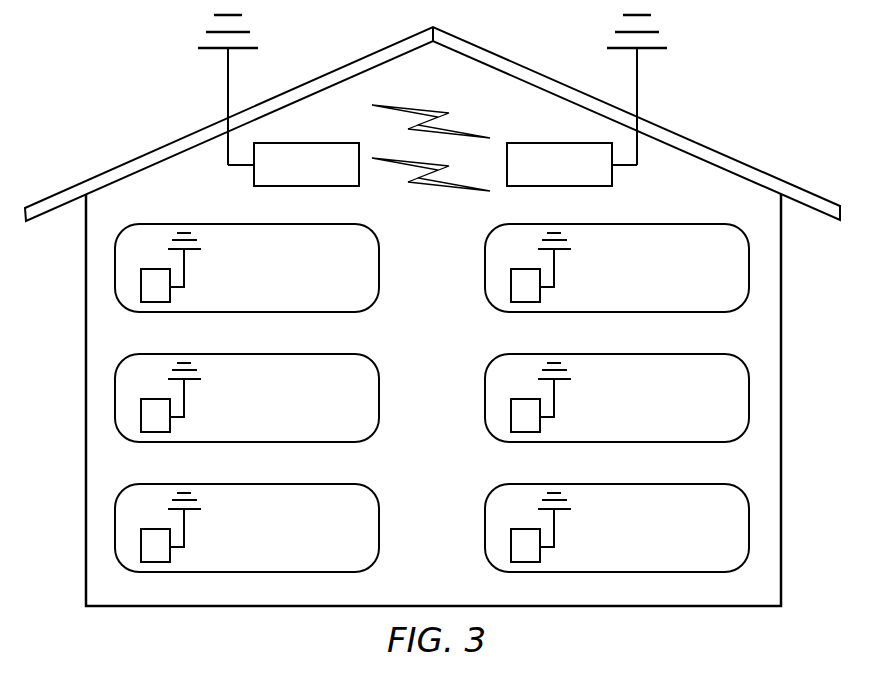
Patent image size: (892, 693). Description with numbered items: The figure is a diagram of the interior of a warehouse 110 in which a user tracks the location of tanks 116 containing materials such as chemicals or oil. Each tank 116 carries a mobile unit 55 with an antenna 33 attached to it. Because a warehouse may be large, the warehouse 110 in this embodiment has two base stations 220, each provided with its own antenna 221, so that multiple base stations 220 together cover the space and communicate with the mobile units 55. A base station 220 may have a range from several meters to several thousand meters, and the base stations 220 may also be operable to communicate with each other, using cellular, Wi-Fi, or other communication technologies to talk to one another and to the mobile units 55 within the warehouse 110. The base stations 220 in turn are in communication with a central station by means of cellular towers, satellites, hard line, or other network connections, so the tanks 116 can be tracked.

The warehouse 110 is at (96, 177).
The antenna 221 is at (218, 57).
The base station 220 is at (323, 176).
The tank 116 is at (359, 280).
The mobile unit 55 is at (166, 300).
The antenna 33 is at (176, 253).